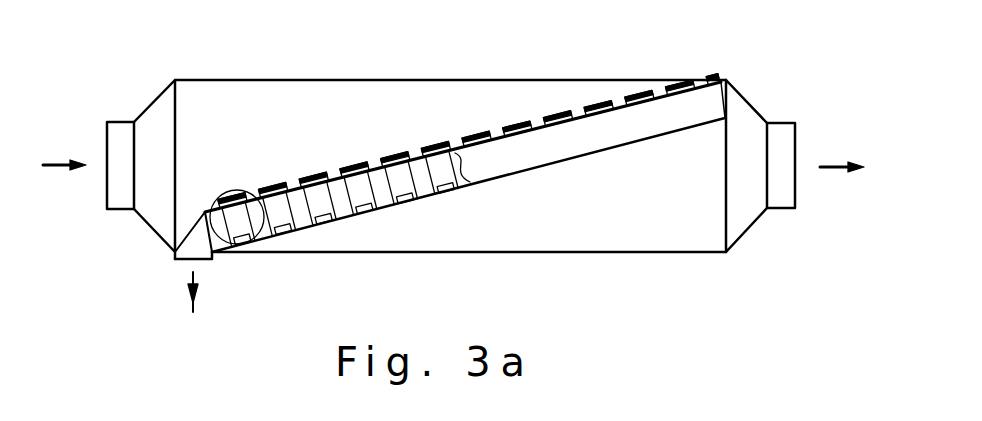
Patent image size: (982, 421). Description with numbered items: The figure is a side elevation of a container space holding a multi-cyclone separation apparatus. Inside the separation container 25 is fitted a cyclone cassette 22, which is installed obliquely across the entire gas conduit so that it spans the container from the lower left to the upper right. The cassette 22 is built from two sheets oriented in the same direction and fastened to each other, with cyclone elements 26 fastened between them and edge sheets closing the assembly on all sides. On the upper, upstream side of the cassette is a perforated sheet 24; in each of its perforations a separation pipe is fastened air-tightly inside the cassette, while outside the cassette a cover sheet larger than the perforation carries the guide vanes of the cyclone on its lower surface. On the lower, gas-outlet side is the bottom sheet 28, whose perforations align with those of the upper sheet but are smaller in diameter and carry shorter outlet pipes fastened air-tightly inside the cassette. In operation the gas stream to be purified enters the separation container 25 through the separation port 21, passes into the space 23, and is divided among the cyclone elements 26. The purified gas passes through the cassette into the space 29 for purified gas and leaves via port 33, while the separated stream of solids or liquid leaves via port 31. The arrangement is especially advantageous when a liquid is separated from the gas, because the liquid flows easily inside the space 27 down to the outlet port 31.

The separation port 21 is at (158, 128).
The cyclone cassette 22 is at (487, 100).
The space 23 is at (240, 120).
The perforated sheet 24 is at (657, 100).
The separation container 25 is at (352, 82).
The cyclone elements 26 is at (237, 240).
The space 27 is at (615, 125).
The bottom sheet 28 is at (693, 128).
The space for purified gas 29 is at (567, 207).
The port 31 is at (192, 250).
The port 33 is at (780, 140).